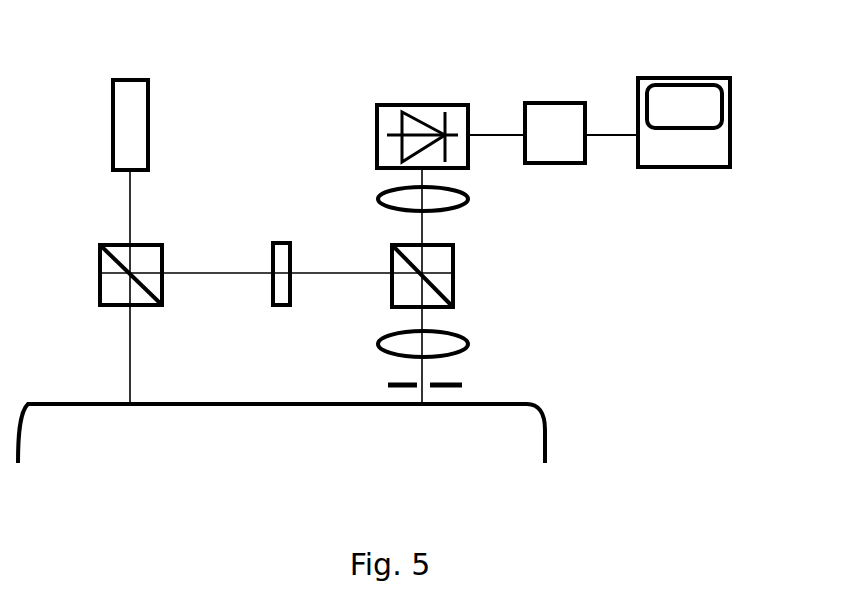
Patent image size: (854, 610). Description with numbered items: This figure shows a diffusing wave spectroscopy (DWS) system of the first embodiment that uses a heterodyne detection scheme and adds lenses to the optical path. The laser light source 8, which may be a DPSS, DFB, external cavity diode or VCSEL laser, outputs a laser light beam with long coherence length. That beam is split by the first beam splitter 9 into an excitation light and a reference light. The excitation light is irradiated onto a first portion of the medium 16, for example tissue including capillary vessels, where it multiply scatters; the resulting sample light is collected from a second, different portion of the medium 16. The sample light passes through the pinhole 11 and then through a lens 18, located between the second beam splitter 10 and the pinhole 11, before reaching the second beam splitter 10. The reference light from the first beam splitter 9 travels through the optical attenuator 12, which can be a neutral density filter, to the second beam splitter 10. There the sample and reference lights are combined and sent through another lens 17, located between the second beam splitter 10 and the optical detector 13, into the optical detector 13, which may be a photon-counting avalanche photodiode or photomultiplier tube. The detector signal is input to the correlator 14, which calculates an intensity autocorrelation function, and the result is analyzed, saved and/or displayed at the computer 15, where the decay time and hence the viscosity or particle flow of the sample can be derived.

The laser light source 8 is at (116, 125).
The first beam splitter 9 is at (119, 275).
The second beam splitter 10 is at (447, 276).
The pinhole 11 is at (448, 382).
The optical attenuator 12 is at (290, 255).
The optical detector 13 is at (401, 136).
The correlator 14 is at (555, 113).
The computer 15 is at (684, 102).
The medium 16 is at (281, 433).
The lens 17 is at (449, 201).
The lens 18 is at (448, 337).